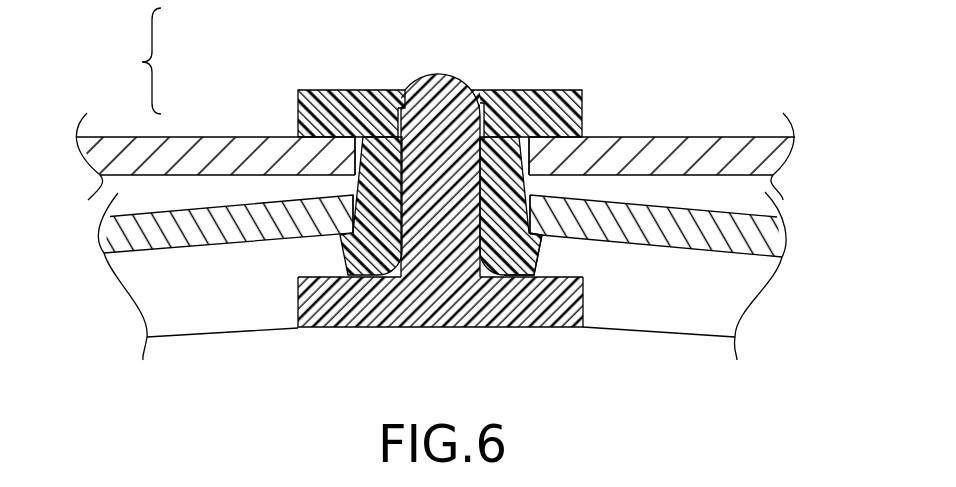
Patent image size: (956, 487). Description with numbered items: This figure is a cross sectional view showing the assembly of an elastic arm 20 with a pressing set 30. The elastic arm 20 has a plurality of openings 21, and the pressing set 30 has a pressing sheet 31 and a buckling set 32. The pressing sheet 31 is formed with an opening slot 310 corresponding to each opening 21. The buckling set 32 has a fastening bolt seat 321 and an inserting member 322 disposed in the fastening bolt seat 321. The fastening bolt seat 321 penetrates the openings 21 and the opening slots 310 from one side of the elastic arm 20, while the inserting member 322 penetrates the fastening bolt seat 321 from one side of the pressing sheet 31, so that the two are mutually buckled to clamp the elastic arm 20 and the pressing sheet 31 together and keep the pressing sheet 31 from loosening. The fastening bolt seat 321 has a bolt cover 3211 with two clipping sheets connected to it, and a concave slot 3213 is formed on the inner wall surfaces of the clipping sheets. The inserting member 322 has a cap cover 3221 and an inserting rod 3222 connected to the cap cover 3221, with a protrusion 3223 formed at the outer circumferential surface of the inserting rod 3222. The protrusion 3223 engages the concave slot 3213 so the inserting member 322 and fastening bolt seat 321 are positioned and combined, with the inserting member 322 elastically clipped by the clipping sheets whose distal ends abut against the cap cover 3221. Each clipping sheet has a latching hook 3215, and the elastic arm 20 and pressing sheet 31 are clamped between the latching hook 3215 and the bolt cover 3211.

The elastic arm 20 is at (682, 150).
The opening 21 is at (356, 150).
The pressing set 30 is at (134, 61).
The pressing sheet 31 is at (215, 225).
The opening slot 310 is at (350, 210).
The buckling set 32 is at (277, 105).
The fastening bolt seat 321 is at (351, 79).
The bolt cover 3211 is at (548, 104).
The concave slot 3213 is at (485, 112).
The latching hook 3215 is at (541, 242).
The inserting member 322 is at (358, 343).
The cap cover 3221 is at (558, 300).
The inserting rod 3222 is at (440, 228).
The protrusion 3223 is at (450, 82).